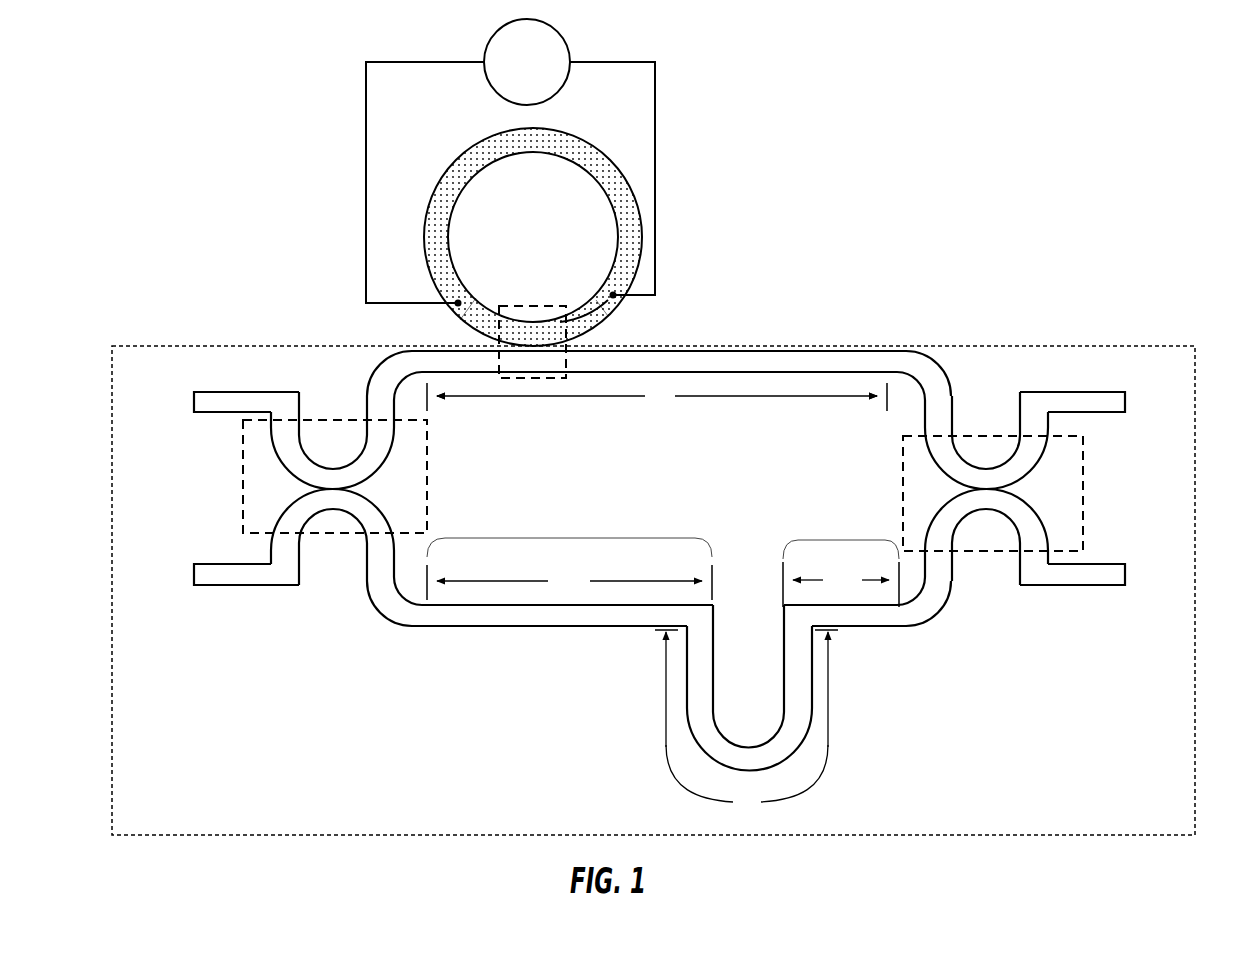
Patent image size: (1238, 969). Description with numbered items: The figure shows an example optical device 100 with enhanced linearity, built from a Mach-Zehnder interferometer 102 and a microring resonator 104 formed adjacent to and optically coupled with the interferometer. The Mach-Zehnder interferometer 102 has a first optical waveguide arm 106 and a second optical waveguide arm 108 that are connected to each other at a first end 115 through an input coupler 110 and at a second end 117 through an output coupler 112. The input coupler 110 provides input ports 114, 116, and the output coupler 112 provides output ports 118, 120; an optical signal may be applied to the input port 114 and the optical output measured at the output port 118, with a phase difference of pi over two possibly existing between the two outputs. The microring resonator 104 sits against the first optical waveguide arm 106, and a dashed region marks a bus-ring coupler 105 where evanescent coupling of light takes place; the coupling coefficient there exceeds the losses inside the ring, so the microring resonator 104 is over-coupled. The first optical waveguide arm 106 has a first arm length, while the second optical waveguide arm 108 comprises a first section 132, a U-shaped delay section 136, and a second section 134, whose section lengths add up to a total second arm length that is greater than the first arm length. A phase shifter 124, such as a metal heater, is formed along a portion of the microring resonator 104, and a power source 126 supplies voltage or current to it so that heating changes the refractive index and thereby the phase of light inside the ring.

The optical device 100 is at (980, 84).
The Mach-Zehnder interferometer 102 is at (1055, 350).
The microring resonator 104 is at (593, 312).
The bus-ring coupler 105 is at (537, 306).
The first optical waveguide arm 106 is at (770, 357).
The second optical waveguide arm 108 is at (555, 617).
The input coupler 110 is at (334, 540).
The output coupler 112 is at (992, 557).
The input port 114 is at (193, 402).
The first end 115 is at (329, 388).
The input port 116 is at (193, 574).
The second end 117 is at (992, 385).
The output port 118 is at (1126, 403).
The output port 120 is at (1126, 575).
The phase shifter 124 is at (478, 145).
The power source 126 is at (547, 22).
The first section 132 is at (569, 538).
The second section 134 is at (842, 540).
The delay section 136 is at (795, 698).